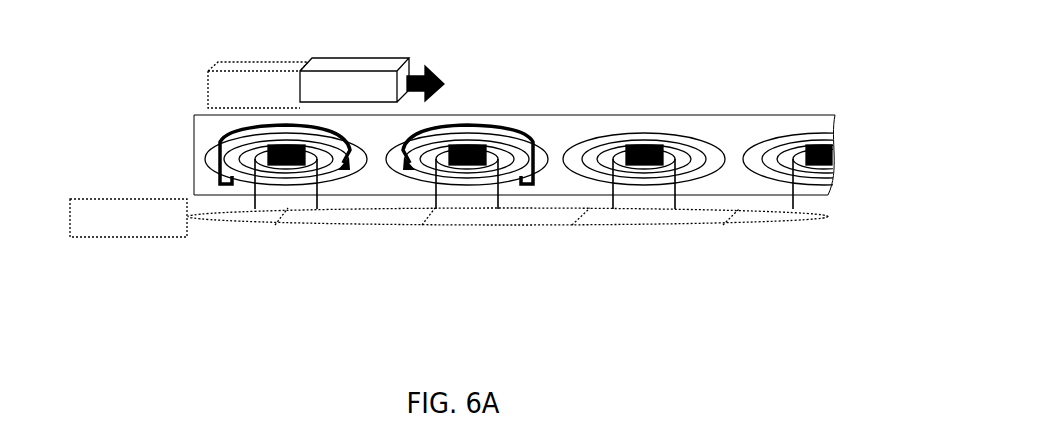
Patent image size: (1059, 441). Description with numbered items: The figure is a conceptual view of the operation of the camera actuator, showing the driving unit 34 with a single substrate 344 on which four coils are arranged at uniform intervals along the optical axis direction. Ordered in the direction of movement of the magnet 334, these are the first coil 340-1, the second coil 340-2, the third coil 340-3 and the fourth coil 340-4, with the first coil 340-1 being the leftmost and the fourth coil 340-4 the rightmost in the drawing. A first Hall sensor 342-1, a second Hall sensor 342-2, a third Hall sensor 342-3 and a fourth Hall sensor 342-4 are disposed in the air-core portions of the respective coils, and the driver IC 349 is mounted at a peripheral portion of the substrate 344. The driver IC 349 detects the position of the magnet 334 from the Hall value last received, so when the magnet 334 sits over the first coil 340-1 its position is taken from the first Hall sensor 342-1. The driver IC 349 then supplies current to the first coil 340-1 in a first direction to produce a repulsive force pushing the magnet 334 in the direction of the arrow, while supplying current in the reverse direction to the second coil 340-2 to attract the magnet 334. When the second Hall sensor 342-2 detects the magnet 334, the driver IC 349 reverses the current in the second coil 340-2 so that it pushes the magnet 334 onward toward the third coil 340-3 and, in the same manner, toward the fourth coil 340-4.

The driving unit 34 is at (577, 236).
The magnet 334 is at (352, 62).
The first coil 340-1 is at (345, 183).
The second coil 340-2 is at (515, 183).
The third coil 340-3 is at (690, 183).
The fourth coil 340-4 is at (770, 183).
The first Hall sensor 342-1 is at (298, 167).
The second Hall sensor 342-2 is at (462, 167).
The third Hall sensor 342-3 is at (640, 167).
The fourth Hall sensor 342-4 is at (810, 167).
The substrate 344 is at (217, 218).
The driver IC 349 is at (122, 223).